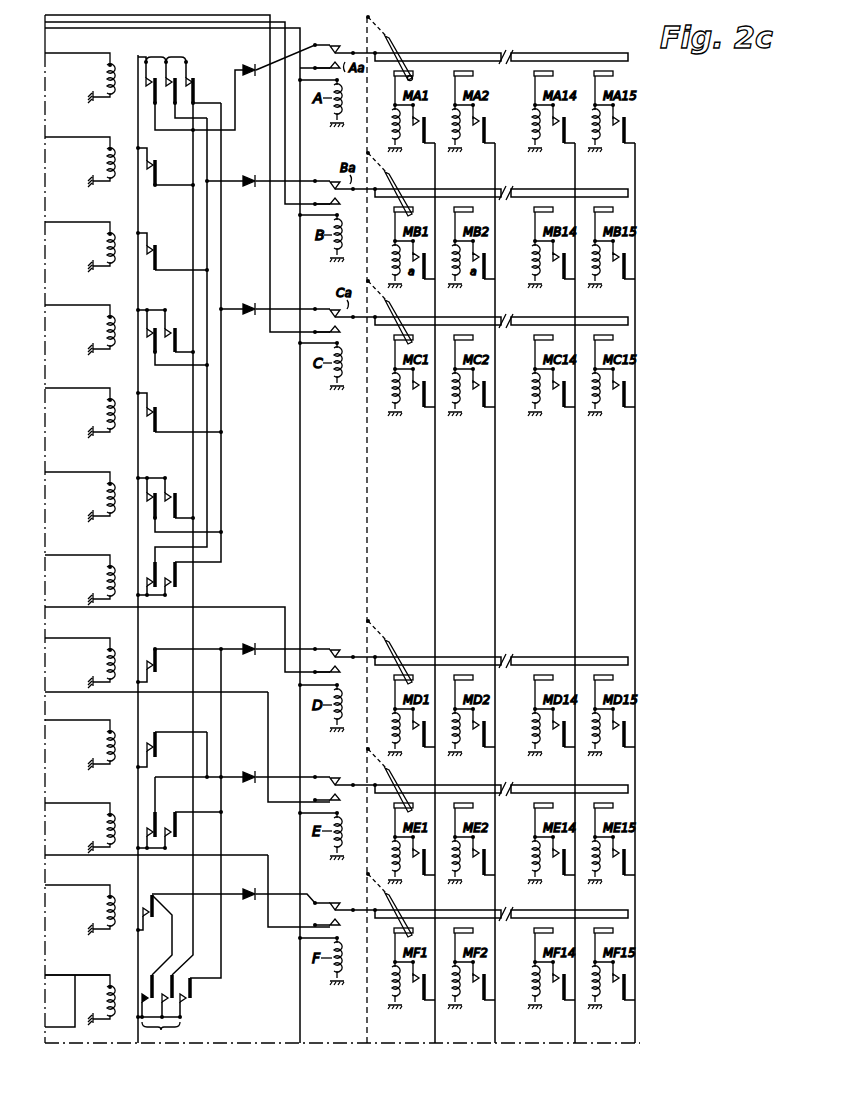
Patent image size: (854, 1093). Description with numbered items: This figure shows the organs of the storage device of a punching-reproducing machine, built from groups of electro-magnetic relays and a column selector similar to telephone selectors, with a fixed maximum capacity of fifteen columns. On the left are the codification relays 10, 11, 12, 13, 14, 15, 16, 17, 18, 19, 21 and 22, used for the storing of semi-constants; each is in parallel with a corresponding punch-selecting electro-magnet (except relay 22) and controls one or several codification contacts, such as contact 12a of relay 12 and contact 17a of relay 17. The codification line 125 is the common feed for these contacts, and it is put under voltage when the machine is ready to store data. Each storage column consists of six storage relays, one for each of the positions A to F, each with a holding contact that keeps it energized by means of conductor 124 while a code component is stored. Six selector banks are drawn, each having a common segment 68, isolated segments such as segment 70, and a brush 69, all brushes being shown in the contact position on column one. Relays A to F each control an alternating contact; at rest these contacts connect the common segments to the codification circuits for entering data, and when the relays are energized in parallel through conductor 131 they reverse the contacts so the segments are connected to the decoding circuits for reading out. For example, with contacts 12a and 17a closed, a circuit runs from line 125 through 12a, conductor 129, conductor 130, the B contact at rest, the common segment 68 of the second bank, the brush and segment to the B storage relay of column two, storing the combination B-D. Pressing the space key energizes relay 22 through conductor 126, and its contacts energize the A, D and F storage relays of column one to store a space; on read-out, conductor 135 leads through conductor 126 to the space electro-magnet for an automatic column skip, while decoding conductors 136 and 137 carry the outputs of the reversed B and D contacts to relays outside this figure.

The codification relay 10 is at (104, 78).
The codification relay 11 is at (104, 162).
The codification relay 12 is at (104, 247).
The codification contact 12a is at (149, 246).
The codification relay 13 is at (104, 330).
The codification relay 14 is at (104, 413).
The codification relay 15 is at (104, 497).
The codification relay 16 is at (104, 580).
The codification relay 17 is at (104, 663).
The codification contact 17a is at (147, 660).
The codification relay 18 is at (104, 745).
The codification relay 19 is at (104, 828).
The codification relay 21 is at (104, 910).
The codification relay 22 is at (114, 970).
The common segment 68 is at (472, 53).
The brush 69 is at (394, 46).
The isolated segment 70 is at (414, 78).
The conductor 124 is at (494, 536).
The codification line 125 is at (139, 302).
The conductor 126 is at (78, 1027).
The conductor 129 is at (210, 240).
The conductor 130 is at (229, 178).
The conductor 131 is at (301, 1013).
The conductor 135 is at (73, 975).
The conductor 136 is at (296, 26).
The conductor 137 is at (246, 608).